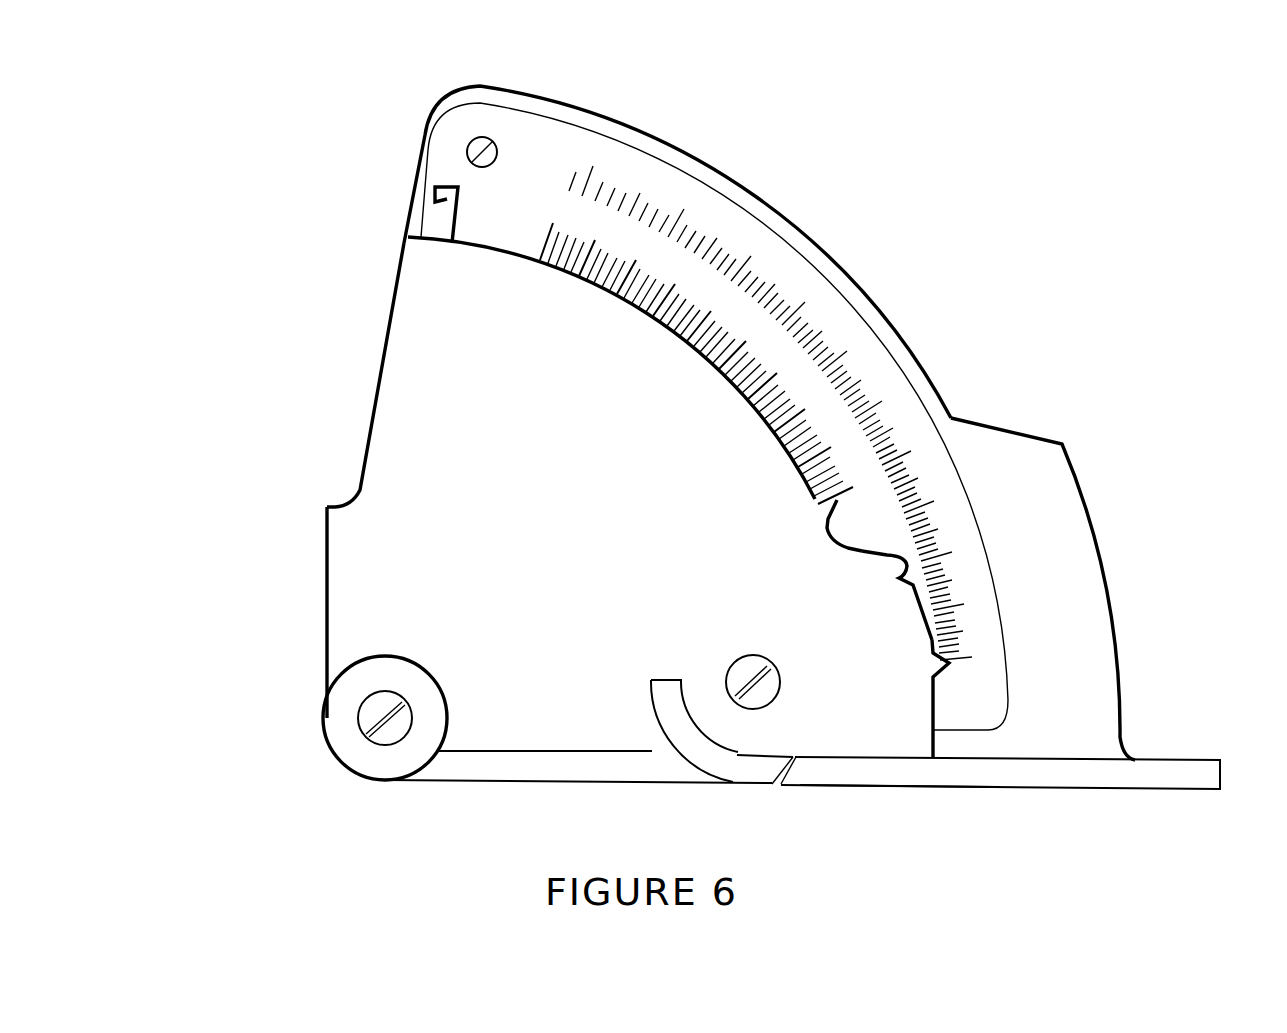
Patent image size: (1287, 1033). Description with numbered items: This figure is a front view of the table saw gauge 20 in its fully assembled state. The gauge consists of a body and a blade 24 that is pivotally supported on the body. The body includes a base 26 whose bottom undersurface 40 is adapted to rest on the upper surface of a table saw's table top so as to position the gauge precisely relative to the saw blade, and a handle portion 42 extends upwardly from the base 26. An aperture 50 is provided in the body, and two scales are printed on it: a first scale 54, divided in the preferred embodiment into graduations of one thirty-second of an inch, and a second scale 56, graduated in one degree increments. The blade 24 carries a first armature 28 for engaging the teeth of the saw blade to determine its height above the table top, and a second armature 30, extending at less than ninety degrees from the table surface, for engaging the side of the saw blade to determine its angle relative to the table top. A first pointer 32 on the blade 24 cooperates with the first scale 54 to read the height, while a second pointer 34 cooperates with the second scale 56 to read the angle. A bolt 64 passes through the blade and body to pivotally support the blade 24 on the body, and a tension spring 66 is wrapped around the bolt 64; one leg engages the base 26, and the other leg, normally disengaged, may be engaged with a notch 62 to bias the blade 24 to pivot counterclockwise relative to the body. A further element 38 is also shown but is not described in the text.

The table saw gauge 20 is at (718, 149).
The blade 24 is at (384, 306).
The base 26 is at (1120, 772).
The first armature 28 is at (652, 716).
The second armature 30 is at (318, 650).
The first pointer 32 is at (943, 660).
The second pointer 34 is at (833, 500).
The locking screw 38 is at (736, 664).
The undersurface 40 is at (898, 800).
The handle portion 42 is at (1027, 517).
The aperture 50 is at (494, 143).
The first scale 54 is at (798, 320).
The second scale 56 is at (665, 298).
The notch 62 is at (897, 587).
The bolt 64 is at (392, 692).
The tension spring 66 is at (443, 223).